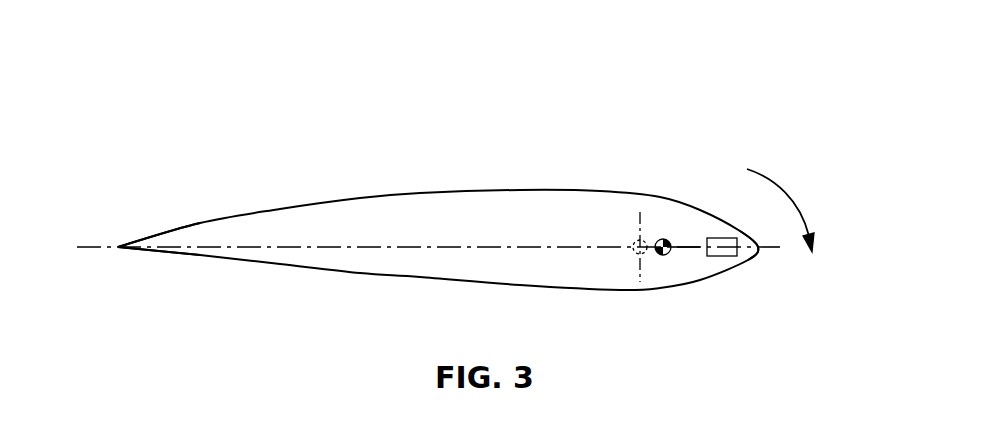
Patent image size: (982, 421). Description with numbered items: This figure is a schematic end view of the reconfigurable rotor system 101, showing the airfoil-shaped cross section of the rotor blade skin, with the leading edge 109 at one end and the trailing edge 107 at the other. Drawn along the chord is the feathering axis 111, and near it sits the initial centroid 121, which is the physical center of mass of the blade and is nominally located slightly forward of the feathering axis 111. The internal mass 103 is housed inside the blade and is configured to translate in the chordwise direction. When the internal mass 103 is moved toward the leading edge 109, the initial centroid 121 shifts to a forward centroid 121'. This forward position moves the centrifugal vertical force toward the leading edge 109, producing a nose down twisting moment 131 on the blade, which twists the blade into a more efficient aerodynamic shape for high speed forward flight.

The reconfigurable rotor system 101 is at (302, 92).
The internal mass 103 is at (728, 238).
The trailing edge 107 is at (109, 257).
The leading edge 109 is at (770, 260).
The feathering axis 111 is at (636, 262).
The centroid 121 is at (588, 206).
The forward centroid 121' is at (714, 286).
The nose down twisting moment 131 is at (764, 168).